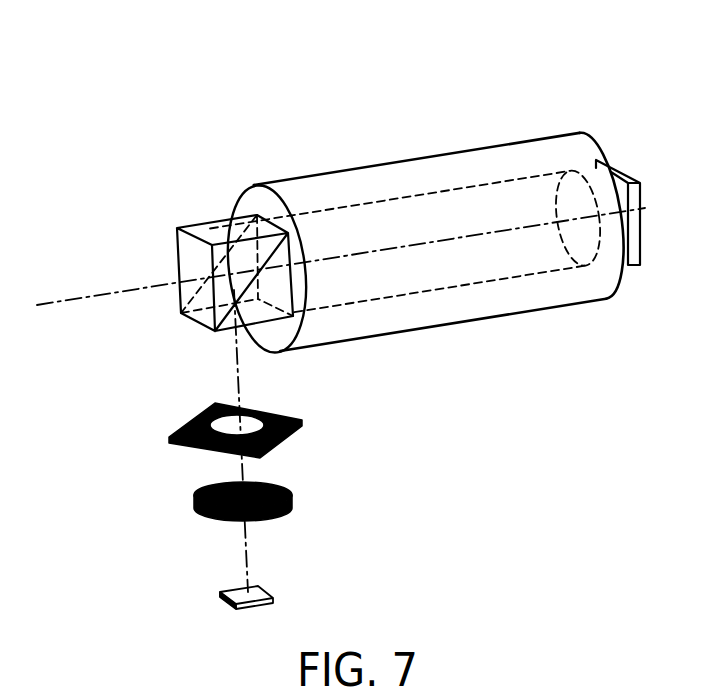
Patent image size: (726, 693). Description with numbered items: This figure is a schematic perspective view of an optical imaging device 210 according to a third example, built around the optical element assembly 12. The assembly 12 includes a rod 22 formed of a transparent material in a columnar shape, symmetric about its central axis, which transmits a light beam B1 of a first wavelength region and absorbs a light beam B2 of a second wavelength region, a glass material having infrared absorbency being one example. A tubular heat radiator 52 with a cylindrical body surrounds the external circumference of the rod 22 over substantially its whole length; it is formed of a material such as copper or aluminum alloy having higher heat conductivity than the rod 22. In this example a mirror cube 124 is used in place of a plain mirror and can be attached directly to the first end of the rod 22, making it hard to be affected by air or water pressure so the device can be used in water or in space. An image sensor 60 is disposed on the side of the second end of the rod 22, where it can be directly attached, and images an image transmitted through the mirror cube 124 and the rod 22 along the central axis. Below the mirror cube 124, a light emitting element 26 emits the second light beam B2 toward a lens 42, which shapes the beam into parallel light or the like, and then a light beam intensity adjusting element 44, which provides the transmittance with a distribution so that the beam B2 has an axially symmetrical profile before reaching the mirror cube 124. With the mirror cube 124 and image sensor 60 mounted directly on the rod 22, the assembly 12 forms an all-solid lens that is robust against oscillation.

The optical measurement assembly 210 is at (521, 100).
The optical element assembly 12 is at (365, 134).
The tubular heat radiator 52 is at (488, 322).
The rod 22 is at (258, 186).
The mirror cube 124 is at (187, 226).
The image sensor 60 is at (642, 192).
The light beam intensity adjusting element 44 is at (297, 434).
The lens 42 is at (294, 500).
The light emitting element 26 is at (273, 597).
The light beam of the first wavelength region B1 is at (107, 293).
The light beam of the second wavelength region B2 is at (232, 374).